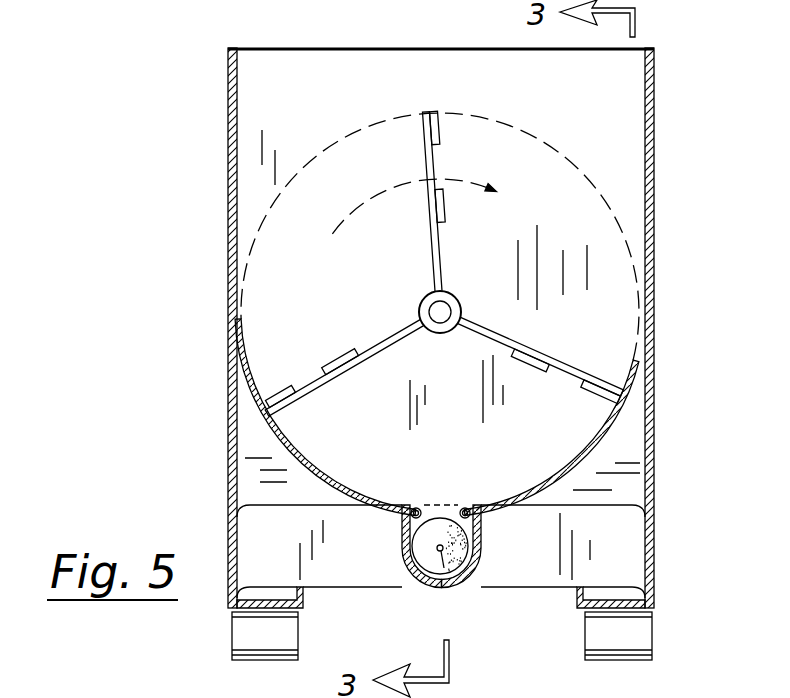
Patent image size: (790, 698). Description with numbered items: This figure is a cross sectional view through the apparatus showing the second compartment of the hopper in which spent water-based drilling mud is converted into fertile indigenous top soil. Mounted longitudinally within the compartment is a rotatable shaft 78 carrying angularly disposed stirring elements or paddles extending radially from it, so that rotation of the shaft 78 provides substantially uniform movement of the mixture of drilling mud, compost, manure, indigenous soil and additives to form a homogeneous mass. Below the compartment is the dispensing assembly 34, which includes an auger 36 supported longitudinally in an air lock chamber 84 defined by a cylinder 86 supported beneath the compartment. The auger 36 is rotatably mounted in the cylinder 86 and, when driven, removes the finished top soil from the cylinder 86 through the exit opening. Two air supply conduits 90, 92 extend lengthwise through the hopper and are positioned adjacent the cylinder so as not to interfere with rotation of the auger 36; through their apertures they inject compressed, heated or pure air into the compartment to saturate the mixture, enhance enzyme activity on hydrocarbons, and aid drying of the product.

The shaft 78 is at (418, 306).
The dispensing assembly 34 is at (445, 533).
The auger 36 is at (428, 555).
The air lock chamber 84 is at (402, 520).
The cylinder 86 is at (478, 563).
The air supply conduit 90 is at (416, 505).
The air supply conduit 92 is at (446, 508).